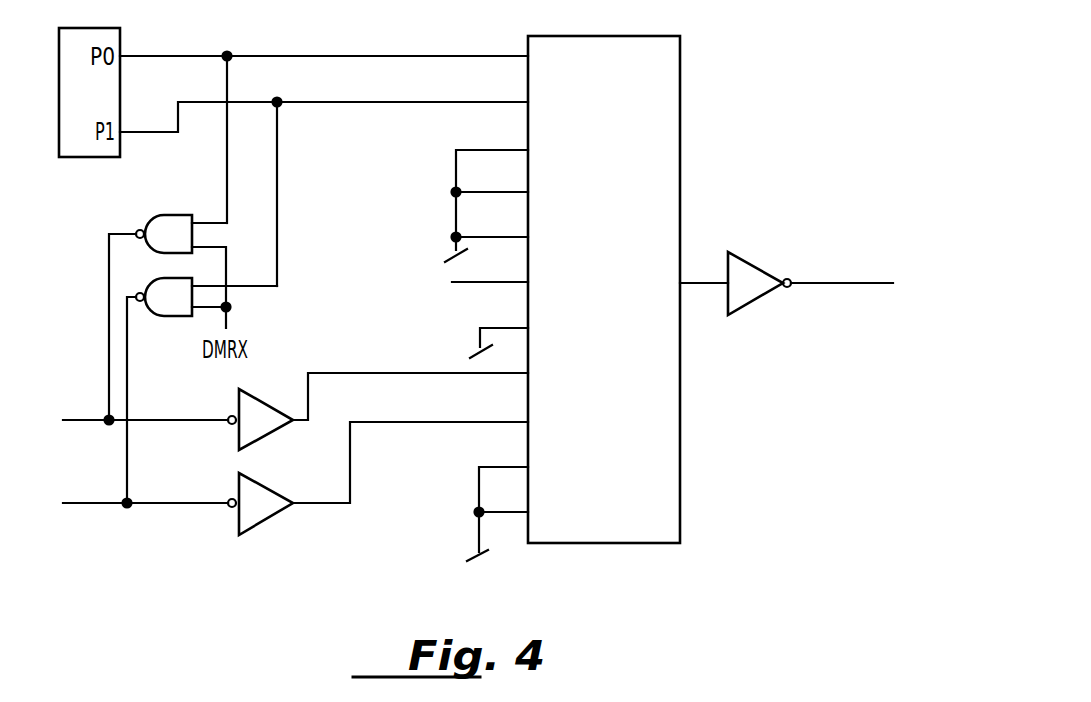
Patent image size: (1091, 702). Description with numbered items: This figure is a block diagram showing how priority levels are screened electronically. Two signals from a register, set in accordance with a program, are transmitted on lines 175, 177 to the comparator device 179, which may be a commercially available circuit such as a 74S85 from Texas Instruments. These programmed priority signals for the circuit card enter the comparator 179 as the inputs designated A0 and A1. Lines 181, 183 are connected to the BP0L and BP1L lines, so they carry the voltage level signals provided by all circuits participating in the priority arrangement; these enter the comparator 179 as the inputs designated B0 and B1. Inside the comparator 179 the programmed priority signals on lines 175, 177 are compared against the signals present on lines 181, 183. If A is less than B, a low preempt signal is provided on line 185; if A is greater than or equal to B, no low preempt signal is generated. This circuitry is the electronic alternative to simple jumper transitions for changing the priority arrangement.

The line 175 is at (182, 54).
The line 177 is at (138, 128).
The comparator device 179 is at (667, 105).
The line 181 is at (83, 418).
The line 183 is at (100, 506).
The line 185 is at (840, 286).